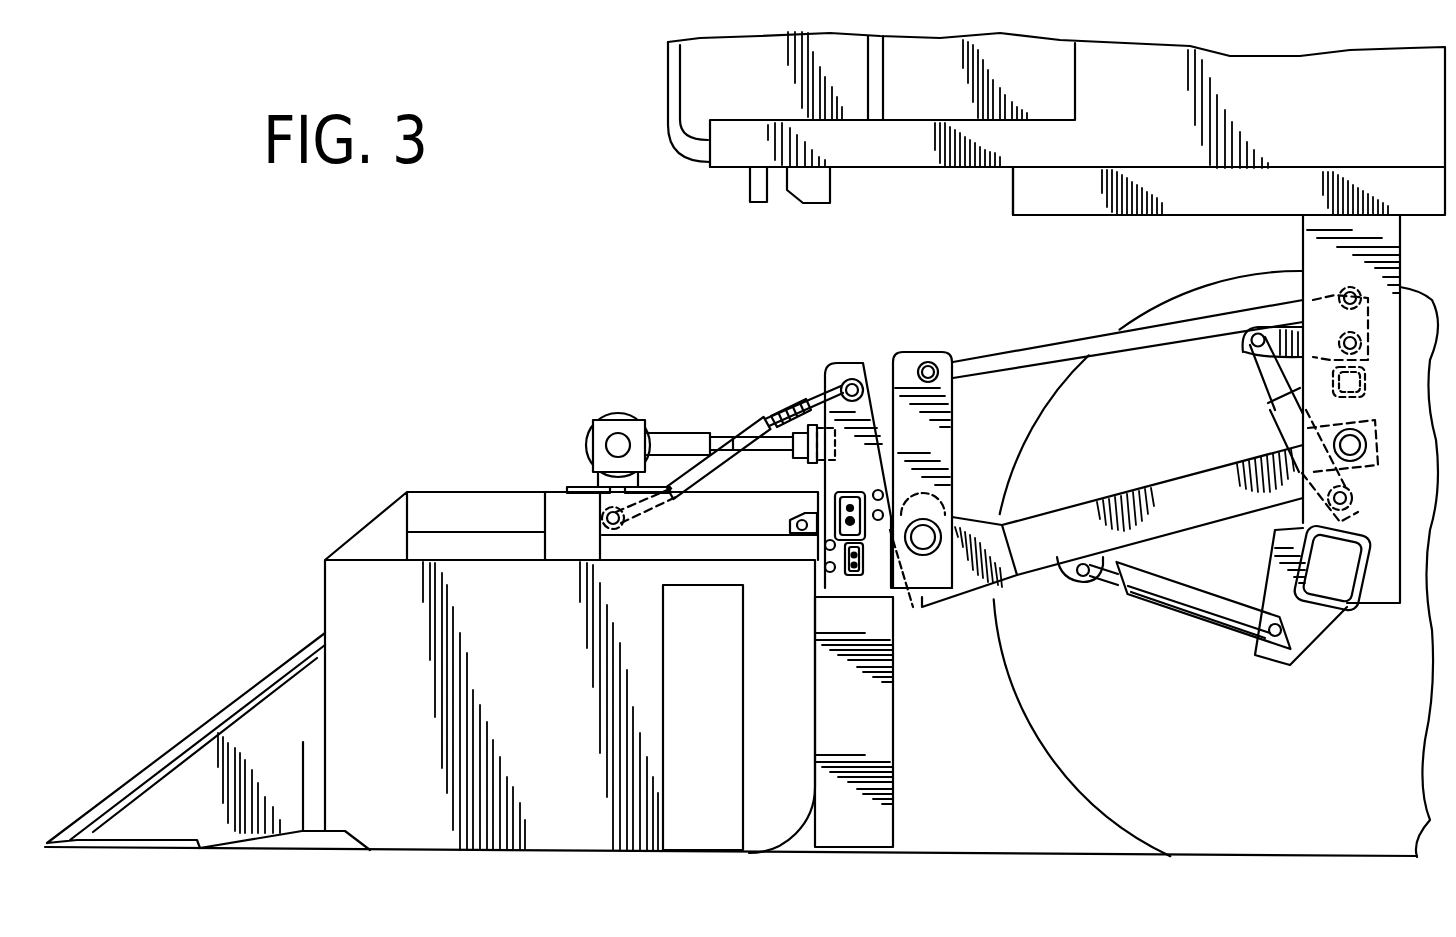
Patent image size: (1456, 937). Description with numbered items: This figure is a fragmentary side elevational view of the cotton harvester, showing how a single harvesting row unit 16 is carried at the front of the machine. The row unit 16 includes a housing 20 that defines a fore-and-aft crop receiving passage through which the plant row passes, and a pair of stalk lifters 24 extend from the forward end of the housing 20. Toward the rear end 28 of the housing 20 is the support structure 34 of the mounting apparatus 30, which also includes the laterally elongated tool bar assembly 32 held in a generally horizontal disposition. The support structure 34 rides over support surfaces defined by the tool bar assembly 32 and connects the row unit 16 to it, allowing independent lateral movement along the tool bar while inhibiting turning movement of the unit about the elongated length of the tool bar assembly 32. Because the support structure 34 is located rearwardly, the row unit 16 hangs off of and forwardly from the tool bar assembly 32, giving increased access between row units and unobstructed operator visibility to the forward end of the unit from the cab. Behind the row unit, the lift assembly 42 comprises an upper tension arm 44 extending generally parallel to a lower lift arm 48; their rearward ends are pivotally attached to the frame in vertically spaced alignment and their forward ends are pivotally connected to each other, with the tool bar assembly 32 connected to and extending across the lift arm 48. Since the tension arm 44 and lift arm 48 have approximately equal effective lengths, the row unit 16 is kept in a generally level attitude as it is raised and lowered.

The harvesting row unit 16 is at (432, 482).
The housing 20 is at (415, 851).
The stalk lifters 24 is at (187, 750).
The rear end 28 is at (815, 733).
The apparatus 30 is at (906, 614).
The tool bar assembly 32 is at (823, 532).
The support structure 34 is at (931, 351).
The lift assembly 42 is at (1215, 456).
The upper tension arm 44 is at (1040, 355).
The lift arm 48 is at (1087, 503).